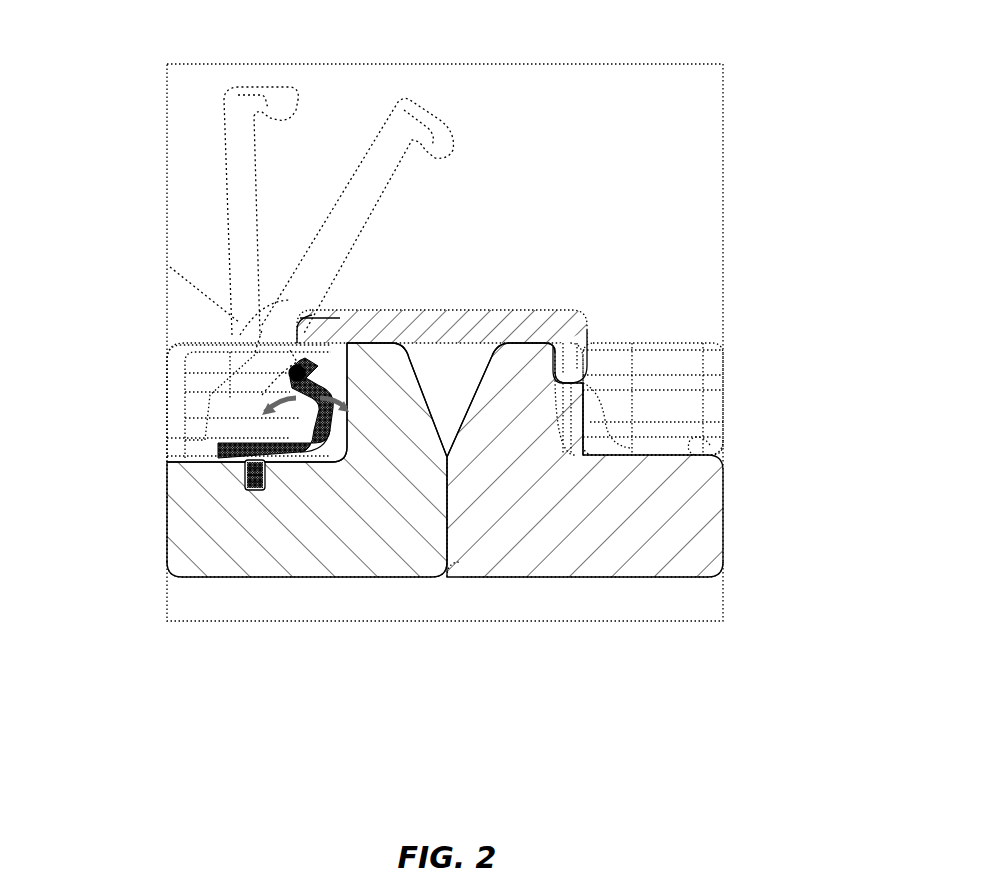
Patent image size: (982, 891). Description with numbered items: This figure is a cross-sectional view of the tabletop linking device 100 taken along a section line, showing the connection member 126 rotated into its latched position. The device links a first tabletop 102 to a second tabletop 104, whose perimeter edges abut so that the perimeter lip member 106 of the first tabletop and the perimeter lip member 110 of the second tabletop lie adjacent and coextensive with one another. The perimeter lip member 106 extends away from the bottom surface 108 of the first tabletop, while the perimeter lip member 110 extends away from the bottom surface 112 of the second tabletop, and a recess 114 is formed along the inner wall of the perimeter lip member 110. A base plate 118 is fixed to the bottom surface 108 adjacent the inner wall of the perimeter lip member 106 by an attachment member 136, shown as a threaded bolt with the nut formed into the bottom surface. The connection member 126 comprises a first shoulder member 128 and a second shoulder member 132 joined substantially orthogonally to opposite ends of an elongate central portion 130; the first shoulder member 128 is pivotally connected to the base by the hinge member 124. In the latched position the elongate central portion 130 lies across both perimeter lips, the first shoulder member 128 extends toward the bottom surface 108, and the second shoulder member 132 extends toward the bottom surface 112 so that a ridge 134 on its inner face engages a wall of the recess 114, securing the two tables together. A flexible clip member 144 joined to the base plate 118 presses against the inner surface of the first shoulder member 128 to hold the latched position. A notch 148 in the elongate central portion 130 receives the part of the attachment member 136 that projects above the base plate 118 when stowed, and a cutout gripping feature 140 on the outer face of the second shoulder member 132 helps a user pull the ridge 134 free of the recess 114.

The tabletop linking device 100 is at (541, 150).
The first tabletop 102 is at (394, 594).
The second tabletop 104 is at (588, 593).
The perimeter lip member 106 is at (388, 358).
The bottom surface 108 is at (205, 458).
The perimeter lip member 110 is at (520, 363).
The bottom surface 112 is at (680, 505).
The recess 114 is at (558, 415).
The base plate 118 is at (291, 452).
The hinge member 124 is at (291, 366).
The connection member 126 is at (453, 256).
The first shoulder member 128 is at (302, 340).
The elongate central portion 130 is at (450, 337).
The second shoulder member 132 is at (557, 350).
The ridge 134 is at (563, 375).
The attachment member 136 is at (248, 476).
The gripping feature 140 is at (577, 323).
The flexible clip member 144 is at (316, 447).
The notch 148 is at (338, 315).